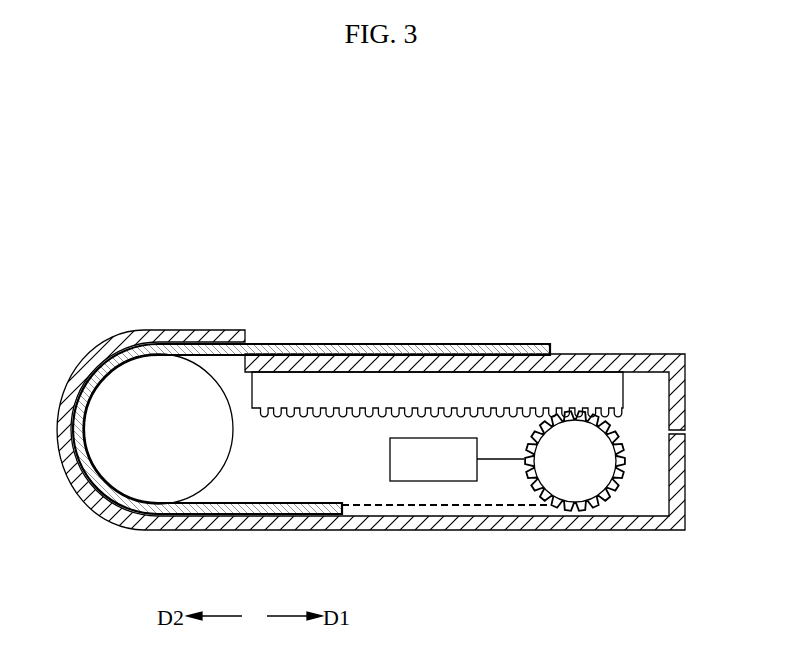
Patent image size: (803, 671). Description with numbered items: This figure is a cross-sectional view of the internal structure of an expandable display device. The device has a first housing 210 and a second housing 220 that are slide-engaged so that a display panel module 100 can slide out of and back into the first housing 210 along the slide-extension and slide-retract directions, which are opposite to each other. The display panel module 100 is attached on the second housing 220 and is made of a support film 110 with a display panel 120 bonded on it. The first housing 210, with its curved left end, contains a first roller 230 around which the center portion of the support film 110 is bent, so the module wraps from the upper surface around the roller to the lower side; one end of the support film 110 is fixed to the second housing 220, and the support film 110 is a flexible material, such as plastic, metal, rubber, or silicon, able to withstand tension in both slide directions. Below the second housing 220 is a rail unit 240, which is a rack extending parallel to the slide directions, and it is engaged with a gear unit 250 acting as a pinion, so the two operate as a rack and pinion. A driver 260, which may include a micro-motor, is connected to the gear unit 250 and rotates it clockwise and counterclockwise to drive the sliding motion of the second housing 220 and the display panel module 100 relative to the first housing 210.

The display panel module 100 is at (472, 344).
The support film 110 is at (370, 505).
The display panel 120 is at (277, 510).
The first housing 210 is at (186, 334).
The second housing 220 is at (634, 353).
The first roller 230 is at (153, 483).
The rail unit 240 is at (623, 382).
The gear unit 250 is at (575, 488).
The driver 260 is at (435, 482).